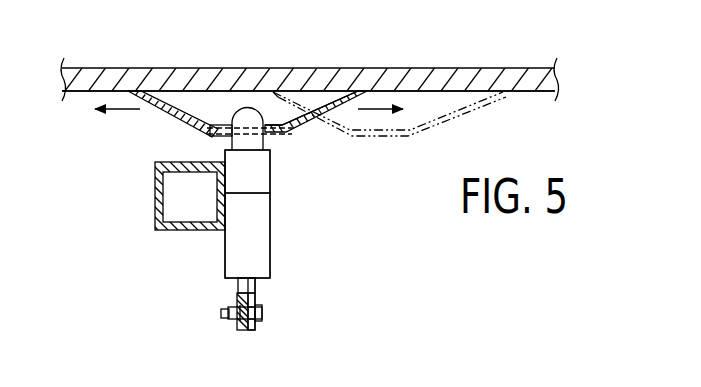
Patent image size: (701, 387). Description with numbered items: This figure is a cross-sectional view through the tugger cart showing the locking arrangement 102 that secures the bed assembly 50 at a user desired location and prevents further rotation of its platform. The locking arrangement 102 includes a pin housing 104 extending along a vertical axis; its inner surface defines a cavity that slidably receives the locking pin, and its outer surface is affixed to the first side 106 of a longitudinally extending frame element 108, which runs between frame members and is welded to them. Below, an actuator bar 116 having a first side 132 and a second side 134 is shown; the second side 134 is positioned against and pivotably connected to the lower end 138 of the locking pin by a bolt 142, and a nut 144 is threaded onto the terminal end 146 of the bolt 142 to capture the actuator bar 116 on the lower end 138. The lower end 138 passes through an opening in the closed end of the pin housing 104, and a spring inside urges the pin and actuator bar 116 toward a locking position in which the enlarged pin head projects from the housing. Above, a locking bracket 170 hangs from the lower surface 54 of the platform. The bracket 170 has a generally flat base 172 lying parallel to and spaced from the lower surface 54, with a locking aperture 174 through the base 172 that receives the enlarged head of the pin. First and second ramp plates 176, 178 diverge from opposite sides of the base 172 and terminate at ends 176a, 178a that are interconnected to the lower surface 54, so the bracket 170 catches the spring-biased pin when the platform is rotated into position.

The bed assembly 50 is at (558, 77).
The lower surface of platform 54 is at (530, 92).
The locking arrangement 102 is at (279, 219).
The pin housing 104 is at (270, 163).
The first side of frame element 106 is at (240, 194).
The frame element 108 is at (151, 196).
The actuator bar 116 is at (236, 292).
The first side of actuator bar 132 is at (240, 326).
The second side of actuator bar 134 is at (256, 331).
The lower end of locking pin 138 is at (259, 293).
The bolt 142 is at (262, 313).
The nut 144 is at (228, 310).
The terminal end of bolt 146 is at (228, 322).
The locking bracket 170 is at (298, 133).
The base 172 is at (215, 133).
The locking aperture 174 is at (229, 127).
The first ramp plate 176 is at (174, 113).
The end of first ramp plate 176a is at (130, 88).
The second ramp plate 178 is at (326, 108).
The end of second ramp plate 178a is at (360, 90).